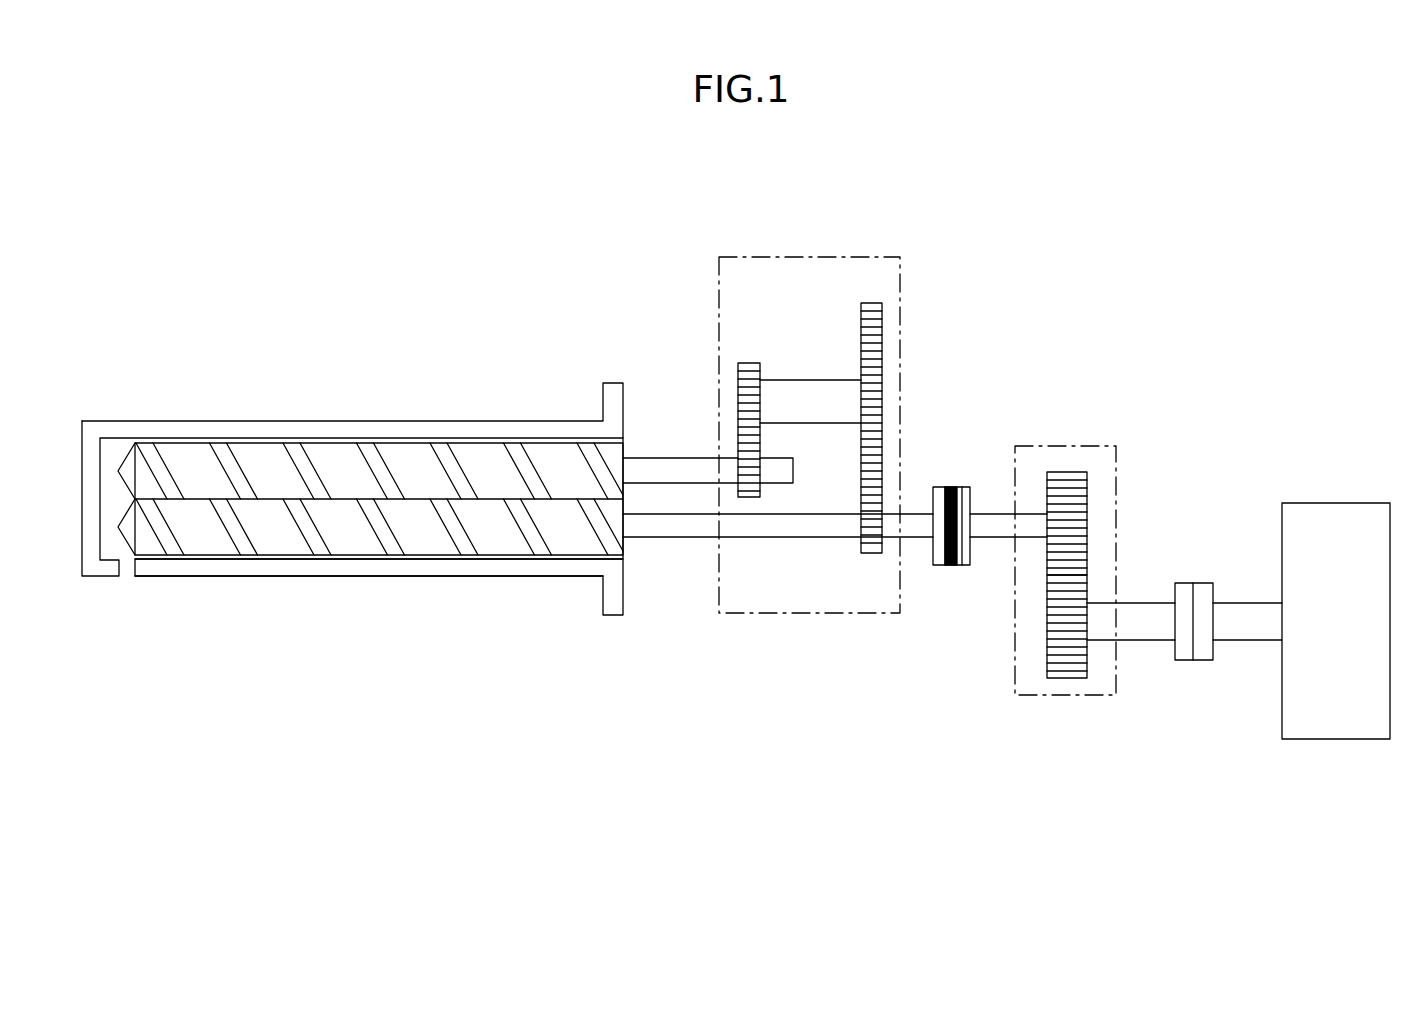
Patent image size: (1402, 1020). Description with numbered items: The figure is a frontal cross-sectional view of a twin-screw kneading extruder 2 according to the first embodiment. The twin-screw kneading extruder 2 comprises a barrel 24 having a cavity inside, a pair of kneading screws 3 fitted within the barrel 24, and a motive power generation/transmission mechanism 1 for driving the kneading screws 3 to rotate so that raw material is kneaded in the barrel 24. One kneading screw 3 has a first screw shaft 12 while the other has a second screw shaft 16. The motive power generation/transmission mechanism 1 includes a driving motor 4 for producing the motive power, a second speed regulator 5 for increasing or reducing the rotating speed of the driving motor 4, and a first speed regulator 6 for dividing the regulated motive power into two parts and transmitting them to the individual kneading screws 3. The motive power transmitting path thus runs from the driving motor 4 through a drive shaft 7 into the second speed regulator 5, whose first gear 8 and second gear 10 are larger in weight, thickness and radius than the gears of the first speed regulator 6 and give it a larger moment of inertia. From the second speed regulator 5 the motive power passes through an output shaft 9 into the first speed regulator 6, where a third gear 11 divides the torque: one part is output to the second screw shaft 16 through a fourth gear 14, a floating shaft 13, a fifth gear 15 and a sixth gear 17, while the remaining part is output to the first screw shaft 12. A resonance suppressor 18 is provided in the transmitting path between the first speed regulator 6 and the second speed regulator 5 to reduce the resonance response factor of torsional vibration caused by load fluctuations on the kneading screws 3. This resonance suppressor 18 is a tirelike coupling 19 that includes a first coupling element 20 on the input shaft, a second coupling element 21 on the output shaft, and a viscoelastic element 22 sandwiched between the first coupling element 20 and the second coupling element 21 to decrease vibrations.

The motive power generation/transmission mechanism 1 is at (1065, 293).
The twin-screw kneading extruder 2 is at (448, 338).
The kneading screws 3 is at (183, 458).
The driving motor 4 is at (1290, 673).
The second speed regulator 5 is at (1118, 523).
The first speed regulator 6 is at (796, 614).
The drive shaft 7 is at (1149, 632).
The first gear 8 is at (1063, 679).
The output shaft 9 is at (988, 518).
The second gear 10 is at (1067, 478).
The third gear 11 is at (868, 554).
The first screw shaft 12 is at (649, 520).
The floating shaft 13 is at (792, 387).
The fourth gear 14 is at (872, 303).
The fifth gear 15 is at (747, 405).
The second screw shaft 16 is at (659, 462).
The sixth gear 17 is at (745, 498).
The resonance suppressor 18 is at (950, 539).
The tirelike coupling 19 is at (963, 580).
The first coupling element 20 is at (963, 492).
The second coupling element 21 is at (938, 490).
The viscoelastic element 22 is at (952, 567).
The barrel 24 is at (364, 567).